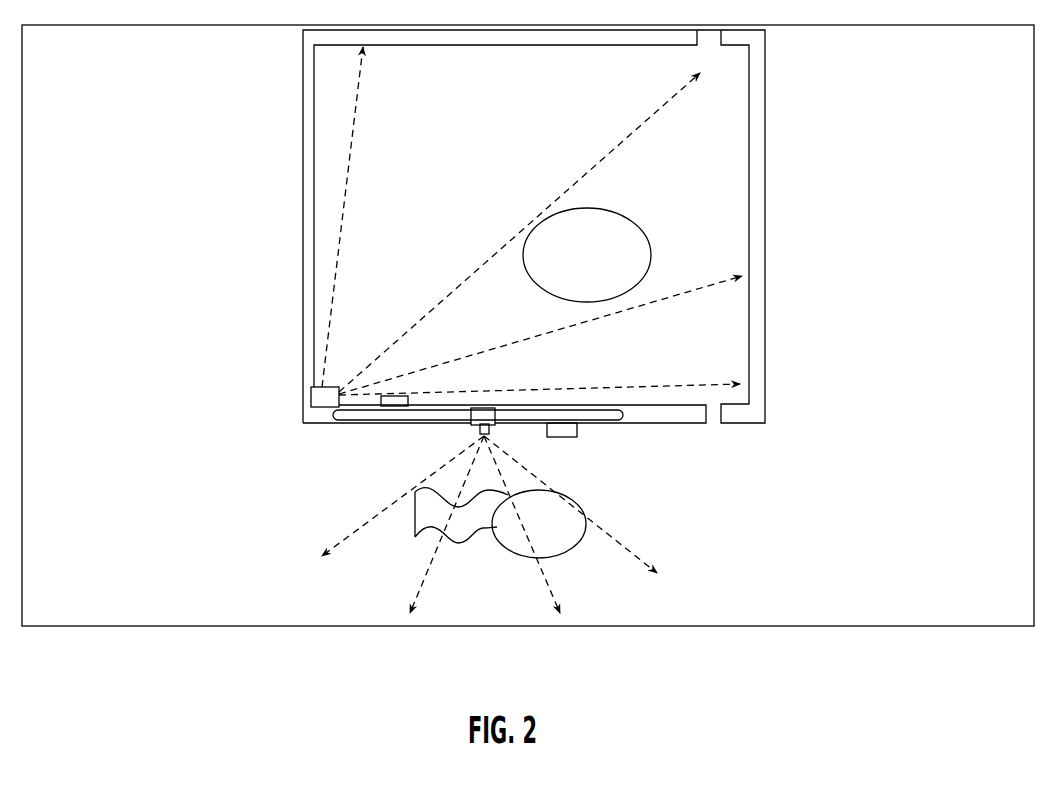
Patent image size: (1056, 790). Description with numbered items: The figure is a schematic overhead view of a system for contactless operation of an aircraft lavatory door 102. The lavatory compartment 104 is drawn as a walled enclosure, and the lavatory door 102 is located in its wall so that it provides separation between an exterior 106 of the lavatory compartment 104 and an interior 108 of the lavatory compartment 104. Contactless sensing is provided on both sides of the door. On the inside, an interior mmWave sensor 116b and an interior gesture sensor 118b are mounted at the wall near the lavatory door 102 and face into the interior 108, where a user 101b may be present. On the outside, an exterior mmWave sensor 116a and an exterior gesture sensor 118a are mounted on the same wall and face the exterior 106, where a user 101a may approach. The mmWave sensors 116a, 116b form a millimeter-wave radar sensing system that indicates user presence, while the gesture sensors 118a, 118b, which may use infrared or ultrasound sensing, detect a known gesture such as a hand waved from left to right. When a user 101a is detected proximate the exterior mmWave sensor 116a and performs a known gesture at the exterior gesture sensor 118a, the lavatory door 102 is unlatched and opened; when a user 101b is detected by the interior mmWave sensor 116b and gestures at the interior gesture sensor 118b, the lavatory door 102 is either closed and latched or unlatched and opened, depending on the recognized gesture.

The lavatory door 102 is at (362, 416).
The lavatory compartment 104 is at (755, 172).
The exterior 106 is at (529, 531).
The interior 108 is at (574, 215).
The user 101a is at (570, 547).
The user 101b is at (613, 223).
The exterior mmWave sensor 116a is at (467, 431).
The interior mmWave sensor 116b is at (302, 392).
The exterior gesture sensor 118a is at (578, 433).
The interior gesture sensor 118b is at (410, 403).